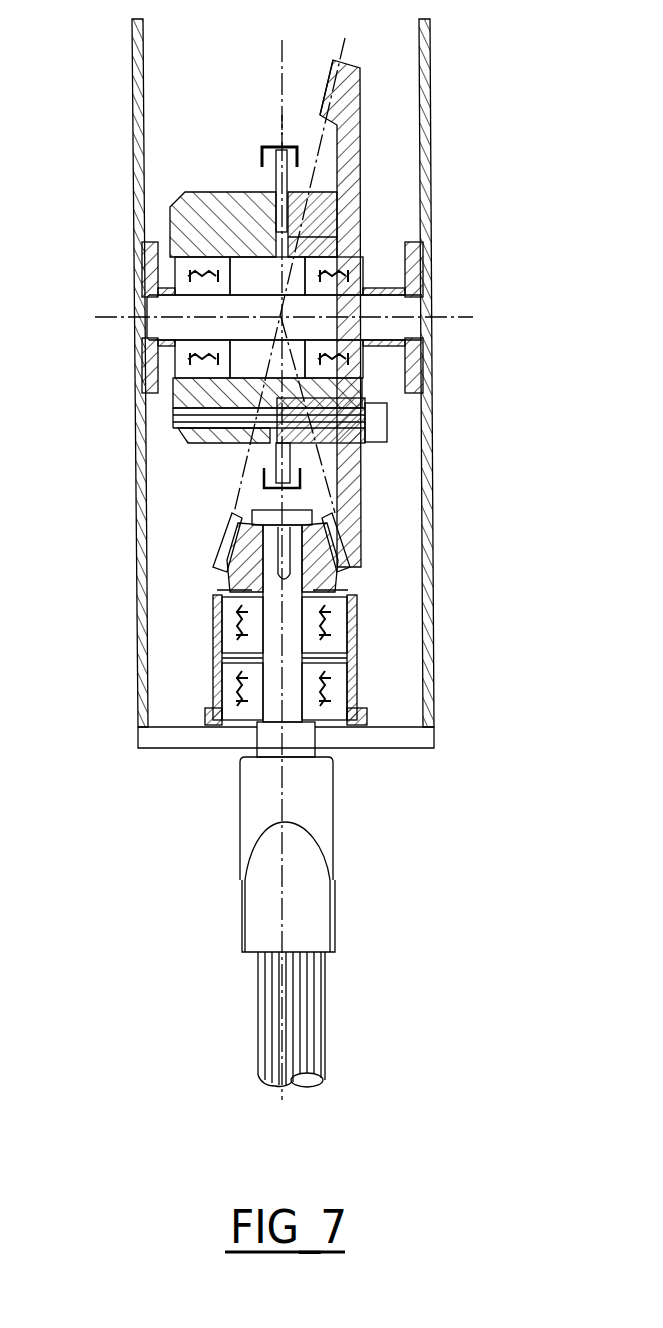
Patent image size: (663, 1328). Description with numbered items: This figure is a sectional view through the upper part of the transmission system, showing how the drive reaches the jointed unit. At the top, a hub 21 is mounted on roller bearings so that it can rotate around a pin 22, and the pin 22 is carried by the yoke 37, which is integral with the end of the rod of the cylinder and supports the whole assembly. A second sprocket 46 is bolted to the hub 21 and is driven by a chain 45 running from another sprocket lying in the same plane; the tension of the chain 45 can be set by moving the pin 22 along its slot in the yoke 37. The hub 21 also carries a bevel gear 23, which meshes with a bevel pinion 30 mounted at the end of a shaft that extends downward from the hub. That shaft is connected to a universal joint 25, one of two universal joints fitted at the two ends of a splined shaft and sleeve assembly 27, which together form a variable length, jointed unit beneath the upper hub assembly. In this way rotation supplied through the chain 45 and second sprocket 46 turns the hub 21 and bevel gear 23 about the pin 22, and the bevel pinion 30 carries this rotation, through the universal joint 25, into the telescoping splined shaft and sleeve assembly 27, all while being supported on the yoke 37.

The hub 21 is at (193, 222).
The pin 22 is at (405, 325).
The bevel gear 23 is at (350, 108).
The universal joint 25 is at (310, 900).
The splined shaft and sleeve assembly 27 is at (303, 1012).
The bevel pinion 30 is at (320, 573).
The yoke 37 is at (435, 663).
The chain 45 is at (270, 145).
The second sprocket 46 is at (333, 197).